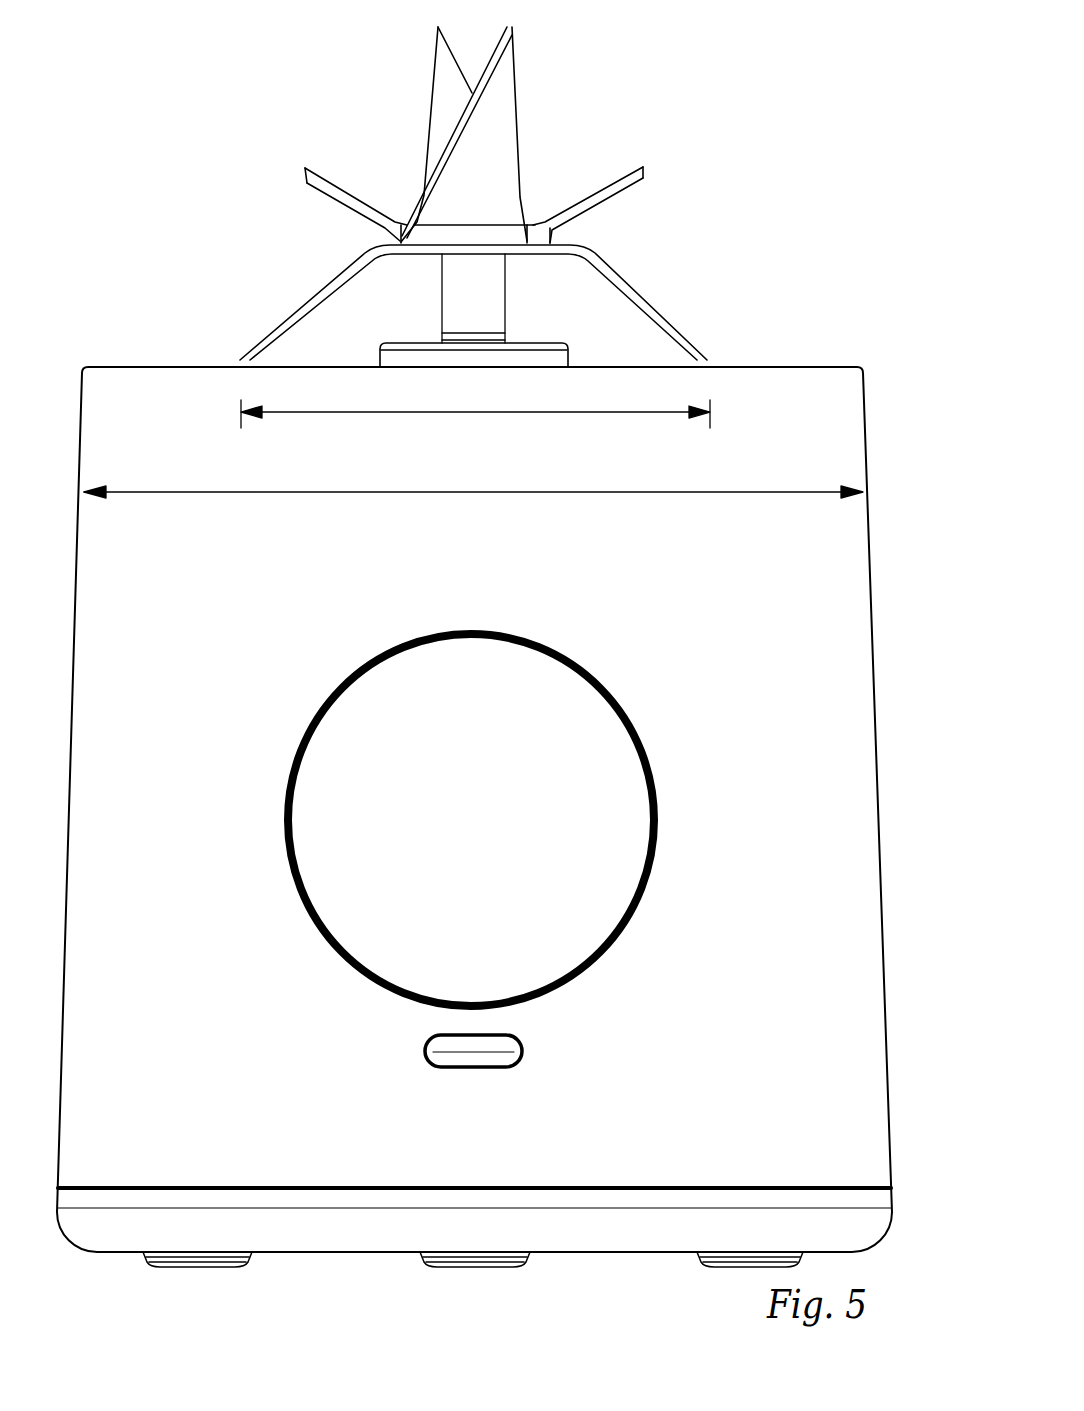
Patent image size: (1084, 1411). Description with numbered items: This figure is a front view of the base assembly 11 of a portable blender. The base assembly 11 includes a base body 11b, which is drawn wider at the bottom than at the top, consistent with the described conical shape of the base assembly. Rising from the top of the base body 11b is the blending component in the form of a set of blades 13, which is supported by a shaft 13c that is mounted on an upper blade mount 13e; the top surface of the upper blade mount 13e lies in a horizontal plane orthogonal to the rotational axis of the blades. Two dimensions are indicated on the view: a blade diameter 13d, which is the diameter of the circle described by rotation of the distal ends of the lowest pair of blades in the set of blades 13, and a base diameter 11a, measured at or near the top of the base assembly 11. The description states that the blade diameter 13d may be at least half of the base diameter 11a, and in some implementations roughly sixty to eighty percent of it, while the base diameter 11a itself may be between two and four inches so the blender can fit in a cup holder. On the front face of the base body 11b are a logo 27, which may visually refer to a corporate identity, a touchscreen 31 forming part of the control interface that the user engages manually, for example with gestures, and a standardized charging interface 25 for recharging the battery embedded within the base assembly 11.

The base assembly 11 is at (787, 108).
The base diameter 11a is at (560, 481).
The base body 11b is at (825, 388).
The set of blades 13 is at (812, 216).
The shaft 13c is at (495, 305).
The blade diameter 13d is at (575, 401).
The upper blade mount 13e is at (605, 343).
The standardized charging interface 25 is at (688, 1100).
The logo 27 is at (688, 611).
The touchscreen 31 is at (815, 932).